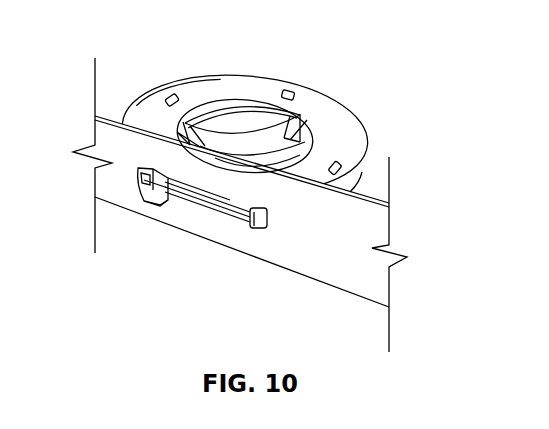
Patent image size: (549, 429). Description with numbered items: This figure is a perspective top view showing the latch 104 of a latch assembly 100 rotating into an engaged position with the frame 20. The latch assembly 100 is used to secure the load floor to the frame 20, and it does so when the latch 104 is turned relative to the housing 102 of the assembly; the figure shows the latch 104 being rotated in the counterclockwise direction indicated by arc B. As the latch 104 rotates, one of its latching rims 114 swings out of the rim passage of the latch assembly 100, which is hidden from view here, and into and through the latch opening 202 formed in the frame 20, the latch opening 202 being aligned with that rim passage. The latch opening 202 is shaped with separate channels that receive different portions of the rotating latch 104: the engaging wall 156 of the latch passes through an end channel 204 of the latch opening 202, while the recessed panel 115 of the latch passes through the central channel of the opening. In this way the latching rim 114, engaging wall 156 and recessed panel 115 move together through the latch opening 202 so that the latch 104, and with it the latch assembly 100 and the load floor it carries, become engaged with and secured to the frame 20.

The latch assembly 100 is at (336, 60).
The housing 102 is at (338, 113).
The latch 104 is at (235, 105).
The frame 20 is at (365, 284).
The end channel 204 is at (130, 124).
The latching rim 114 is at (135, 221).
The engaging wall 156 is at (140, 190).
The recessed panel 115 is at (176, 204).
The latch opening 202 is at (236, 214).
The arc B is at (118, 235).